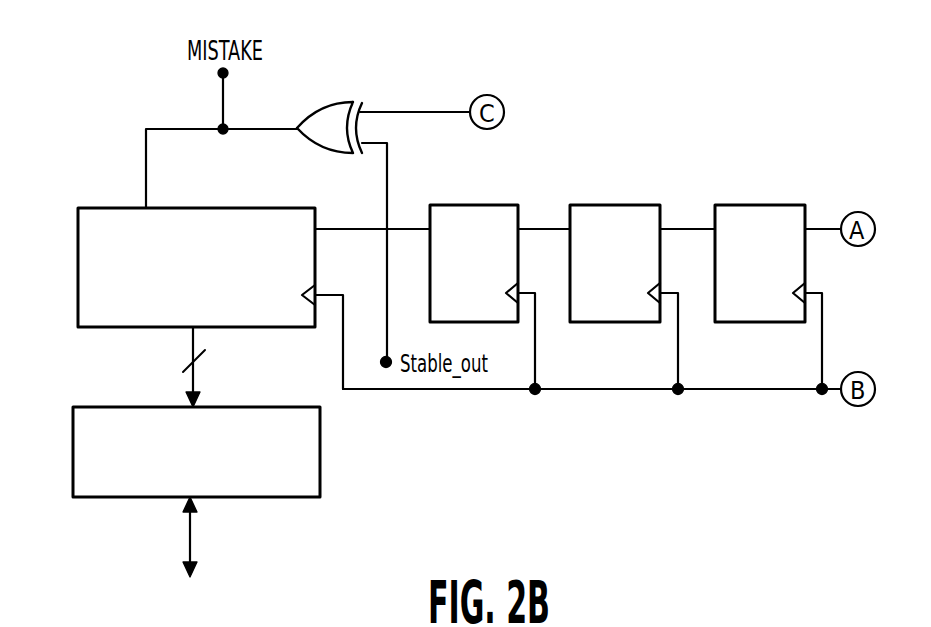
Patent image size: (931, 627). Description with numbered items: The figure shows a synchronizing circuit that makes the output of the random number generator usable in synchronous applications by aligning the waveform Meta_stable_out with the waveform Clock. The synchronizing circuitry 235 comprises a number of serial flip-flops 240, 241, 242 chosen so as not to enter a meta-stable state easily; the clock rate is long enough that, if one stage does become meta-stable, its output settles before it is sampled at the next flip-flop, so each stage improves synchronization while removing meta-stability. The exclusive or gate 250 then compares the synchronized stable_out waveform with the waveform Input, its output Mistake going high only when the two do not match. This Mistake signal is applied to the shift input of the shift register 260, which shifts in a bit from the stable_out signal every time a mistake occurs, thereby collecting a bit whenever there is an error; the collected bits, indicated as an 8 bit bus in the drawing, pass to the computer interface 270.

The synchronizing circuitry 235 is at (716, 85).
The flip-flop 240 is at (763, 205).
The flip-flop 241 is at (612, 205).
The flip-flop 242 is at (458, 205).
The exclusive or gate 250 is at (340, 100).
The shift register 260 is at (115, 330).
The computer interface 270 is at (320, 455).
The 8-bit bus 8 is at (203, 367).